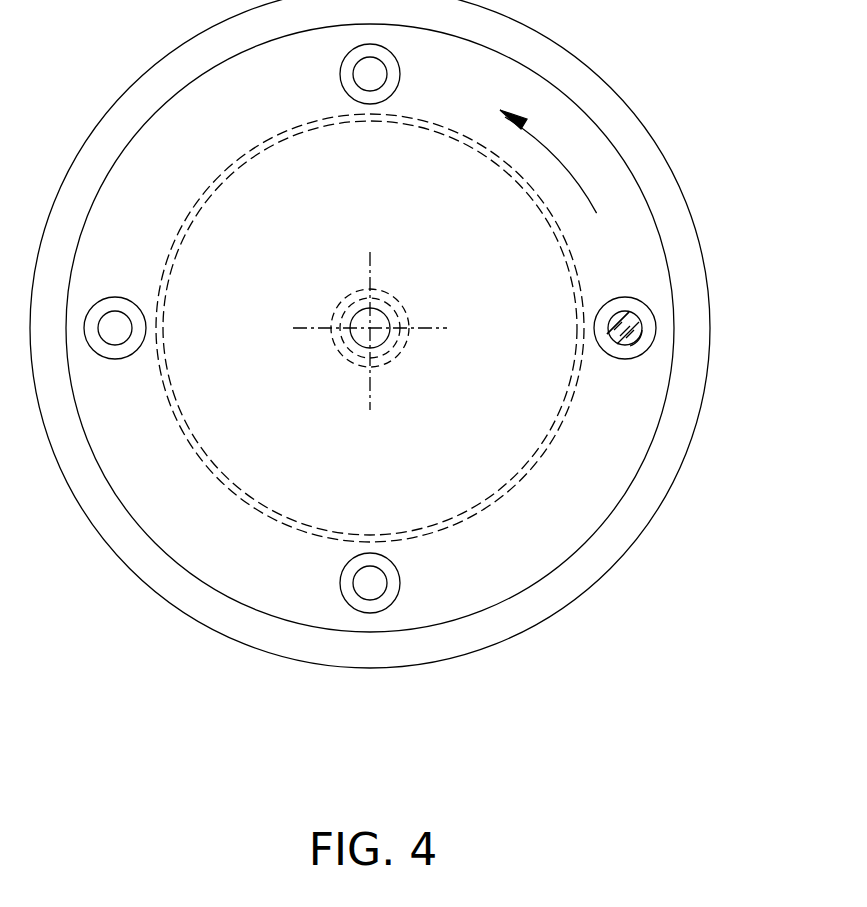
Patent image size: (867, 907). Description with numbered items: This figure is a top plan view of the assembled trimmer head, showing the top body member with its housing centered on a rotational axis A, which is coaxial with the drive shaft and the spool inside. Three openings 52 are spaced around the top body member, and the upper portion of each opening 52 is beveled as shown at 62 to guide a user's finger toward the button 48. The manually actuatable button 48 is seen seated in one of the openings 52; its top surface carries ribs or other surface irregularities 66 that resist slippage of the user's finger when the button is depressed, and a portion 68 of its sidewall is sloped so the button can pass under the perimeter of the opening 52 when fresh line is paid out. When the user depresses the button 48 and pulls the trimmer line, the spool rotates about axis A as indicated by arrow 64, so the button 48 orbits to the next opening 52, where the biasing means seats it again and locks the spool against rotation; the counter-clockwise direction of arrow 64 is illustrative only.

The rotational axis A is at (370, 329).
The manually actuatable button 48 is at (637, 358).
The opening 52 is at (360, 75).
The bevel 62 is at (393, 78).
The arrow 64 is at (560, 160).
The ribs or surface irregularities 66 is at (642, 327).
The sloped sidewall portion 68 is at (613, 318).